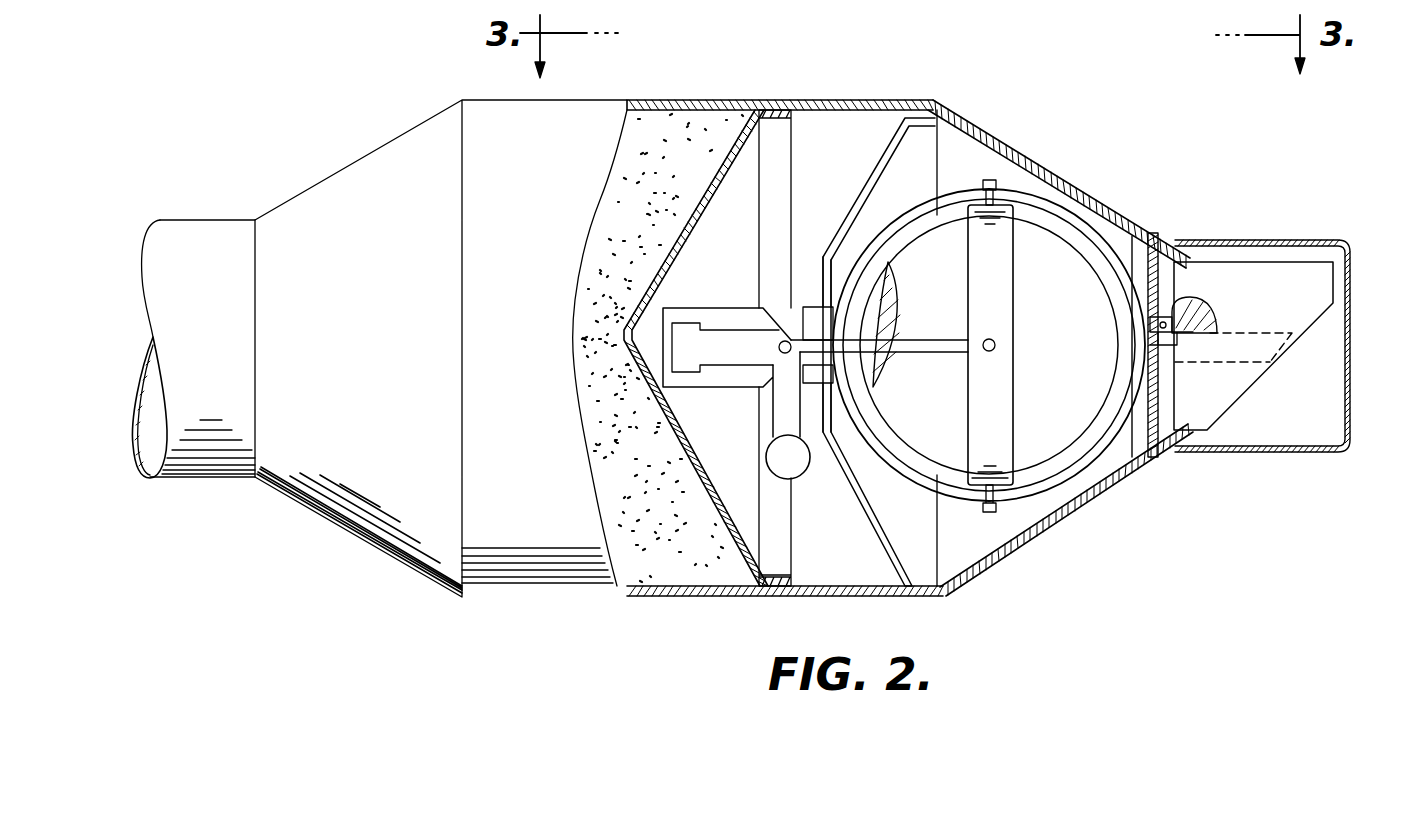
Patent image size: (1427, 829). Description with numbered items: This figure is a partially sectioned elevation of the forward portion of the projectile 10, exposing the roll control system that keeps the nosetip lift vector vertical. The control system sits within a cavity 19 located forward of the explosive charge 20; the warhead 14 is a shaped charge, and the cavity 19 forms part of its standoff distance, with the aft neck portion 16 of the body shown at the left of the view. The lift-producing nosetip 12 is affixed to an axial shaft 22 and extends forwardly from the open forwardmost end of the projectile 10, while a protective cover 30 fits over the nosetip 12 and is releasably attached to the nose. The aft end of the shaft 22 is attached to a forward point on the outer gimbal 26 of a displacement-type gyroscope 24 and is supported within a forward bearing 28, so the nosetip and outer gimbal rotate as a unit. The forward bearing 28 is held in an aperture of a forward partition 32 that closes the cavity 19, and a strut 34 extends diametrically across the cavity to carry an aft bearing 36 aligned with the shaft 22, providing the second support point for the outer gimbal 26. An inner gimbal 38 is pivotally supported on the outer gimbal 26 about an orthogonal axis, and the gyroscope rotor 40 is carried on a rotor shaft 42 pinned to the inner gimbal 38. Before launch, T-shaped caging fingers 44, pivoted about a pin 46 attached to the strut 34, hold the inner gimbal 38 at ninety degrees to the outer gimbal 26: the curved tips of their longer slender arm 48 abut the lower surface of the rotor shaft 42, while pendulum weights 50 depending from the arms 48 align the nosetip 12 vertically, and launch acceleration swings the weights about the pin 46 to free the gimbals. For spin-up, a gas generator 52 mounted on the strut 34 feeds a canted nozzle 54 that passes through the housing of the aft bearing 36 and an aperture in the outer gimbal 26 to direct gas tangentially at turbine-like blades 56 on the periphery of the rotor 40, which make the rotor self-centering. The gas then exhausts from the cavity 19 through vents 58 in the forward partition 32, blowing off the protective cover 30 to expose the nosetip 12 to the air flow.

The projectile 10 is at (388, 102).
The lift-producing nosetip 12 is at (1235, 388).
The warhead 14 is at (528, 477).
The inlet neck 16 is at (212, 310).
The cavity 19 is at (841, 172).
The explosive charge 20 is at (620, 170).
The axial shaft 22 is at (1192, 342).
The displacement-type gyroscope 24 is at (1000, 170).
The outer gimbal 26 is at (1060, 202).
The forward bearing 28 is at (1175, 305).
The protective cover 30 is at (1352, 390).
The forward partition 32 is at (1150, 258).
The strut 34 is at (887, 537).
The aft bearing 36 is at (780, 334).
The inner gimbal 38 is at (1008, 302).
The gyroscope rotor 40 is at (1078, 409).
The rotor shaft 42 is at (997, 343).
The caging fingers 44 is at (753, 354).
The pin 46 is at (781, 341).
The slender arm 48 is at (915, 352).
The pendulum weights 50 is at (800, 467).
The gas generator 52 is at (721, 381).
The canted nozzle 54 is at (847, 330).
The turbine-like blades 56 is at (892, 272).
The vents 58 is at (1157, 277).